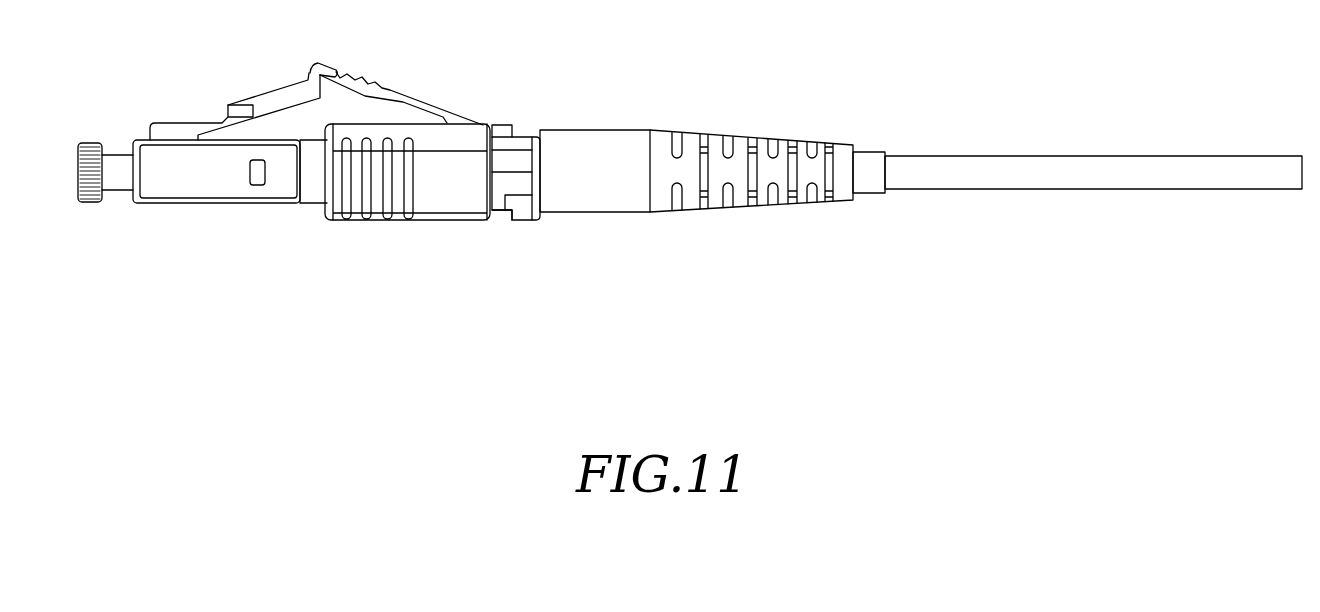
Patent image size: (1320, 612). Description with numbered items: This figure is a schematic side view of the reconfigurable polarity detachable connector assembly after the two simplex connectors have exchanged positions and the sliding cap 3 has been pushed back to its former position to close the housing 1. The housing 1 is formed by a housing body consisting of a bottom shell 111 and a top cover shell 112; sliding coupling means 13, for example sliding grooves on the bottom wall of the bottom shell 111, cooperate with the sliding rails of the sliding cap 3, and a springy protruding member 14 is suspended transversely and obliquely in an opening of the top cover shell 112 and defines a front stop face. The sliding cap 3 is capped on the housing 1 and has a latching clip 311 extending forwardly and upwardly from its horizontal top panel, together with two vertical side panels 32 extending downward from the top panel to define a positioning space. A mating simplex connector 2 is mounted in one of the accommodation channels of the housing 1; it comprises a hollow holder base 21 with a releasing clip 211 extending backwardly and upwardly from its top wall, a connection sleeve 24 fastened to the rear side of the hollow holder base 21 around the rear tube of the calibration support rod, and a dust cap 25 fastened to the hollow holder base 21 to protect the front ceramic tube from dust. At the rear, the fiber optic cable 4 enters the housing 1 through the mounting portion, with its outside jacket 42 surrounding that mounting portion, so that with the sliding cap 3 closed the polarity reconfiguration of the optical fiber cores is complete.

The housing 1 is at (582, 278).
The mating simplex connector 2 is at (169, 99).
The sliding cap 3 is at (410, 250).
The fiber optic cable 4 is at (1038, 172).
The sliding coupling means 13 is at (502, 212).
The springy protruding member 14 is at (498, 125).
The hollow holder base 21 is at (200, 185).
The connection sleeve 24 is at (312, 188).
The dust cap 25 is at (117, 177).
The vertical side panel 32 is at (445, 203).
The outside jacket 42 is at (738, 145).
The bottom shell 111 is at (502, 185).
The top cover shell 112 is at (517, 160).
The releasing clip 211 is at (276, 98).
The latching clip 311 is at (360, 85).